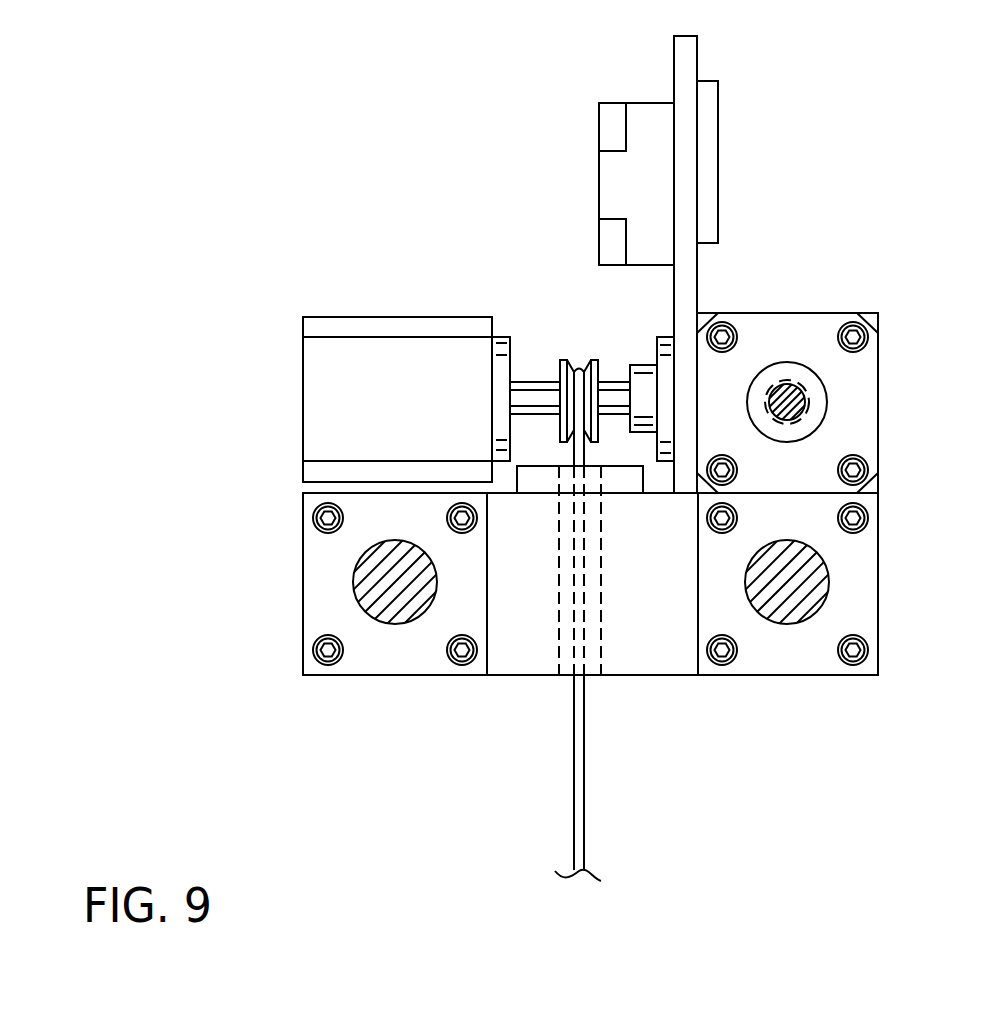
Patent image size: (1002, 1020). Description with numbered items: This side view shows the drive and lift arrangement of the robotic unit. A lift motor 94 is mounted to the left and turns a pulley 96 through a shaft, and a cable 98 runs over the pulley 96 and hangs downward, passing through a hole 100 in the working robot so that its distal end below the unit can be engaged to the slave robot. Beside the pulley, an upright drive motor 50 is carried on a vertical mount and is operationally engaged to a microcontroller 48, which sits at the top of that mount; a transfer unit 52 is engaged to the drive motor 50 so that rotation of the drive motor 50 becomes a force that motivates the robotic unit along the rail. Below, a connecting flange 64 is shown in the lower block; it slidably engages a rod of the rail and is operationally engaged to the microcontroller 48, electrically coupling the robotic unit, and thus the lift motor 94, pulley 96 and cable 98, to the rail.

The microcontroller 48 is at (598, 143).
The drive motor 50 is at (830, 388).
The transfer unit 52 is at (805, 411).
The connecting flange 64 is at (830, 586).
The lift motor 94 is at (353, 320).
The pulley 96 is at (565, 360).
The cable 98 is at (580, 370).
The hole 100 is at (582, 602).